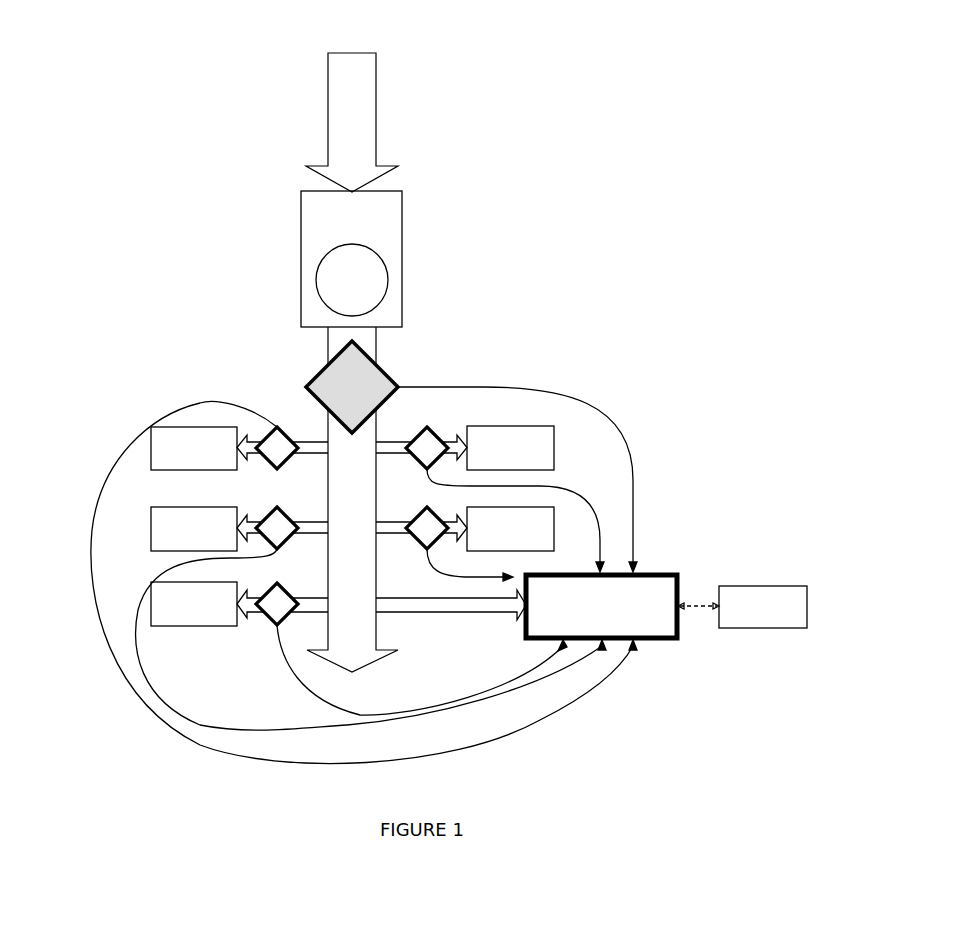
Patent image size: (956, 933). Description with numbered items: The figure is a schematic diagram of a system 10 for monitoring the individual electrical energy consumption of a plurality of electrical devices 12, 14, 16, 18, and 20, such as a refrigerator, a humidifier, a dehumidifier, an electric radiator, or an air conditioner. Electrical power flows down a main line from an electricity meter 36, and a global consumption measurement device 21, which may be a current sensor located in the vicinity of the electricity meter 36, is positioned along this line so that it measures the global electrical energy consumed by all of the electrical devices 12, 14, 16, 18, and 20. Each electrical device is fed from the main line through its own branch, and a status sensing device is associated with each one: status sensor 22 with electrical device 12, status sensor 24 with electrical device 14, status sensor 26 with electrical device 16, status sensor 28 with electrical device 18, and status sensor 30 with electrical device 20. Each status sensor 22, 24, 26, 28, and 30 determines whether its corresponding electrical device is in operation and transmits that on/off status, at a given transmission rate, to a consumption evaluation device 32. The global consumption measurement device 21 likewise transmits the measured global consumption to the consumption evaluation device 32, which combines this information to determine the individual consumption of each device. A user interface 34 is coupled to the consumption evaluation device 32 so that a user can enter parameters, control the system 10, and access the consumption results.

The system 10 is at (600, 230).
The electrical device 12 is at (160, 447).
The electrical device 14 is at (160, 532).
The electrical device 16 is at (160, 606).
The electrical device 18 is at (538, 443).
The electrical device 20 is at (545, 530).
The global consumption measurement device 21 is at (362, 377).
The status sensing device 22 is at (272, 445).
The status sensing device 24 is at (270, 535).
The status sensing device 26 is at (272, 602).
The status sensing device 28 is at (425, 455).
The status sensing device 30 is at (428, 515).
The consumption evaluation device 32 is at (658, 587).
The user interface 34 is at (780, 605).
The electricity meter 36 is at (375, 235).